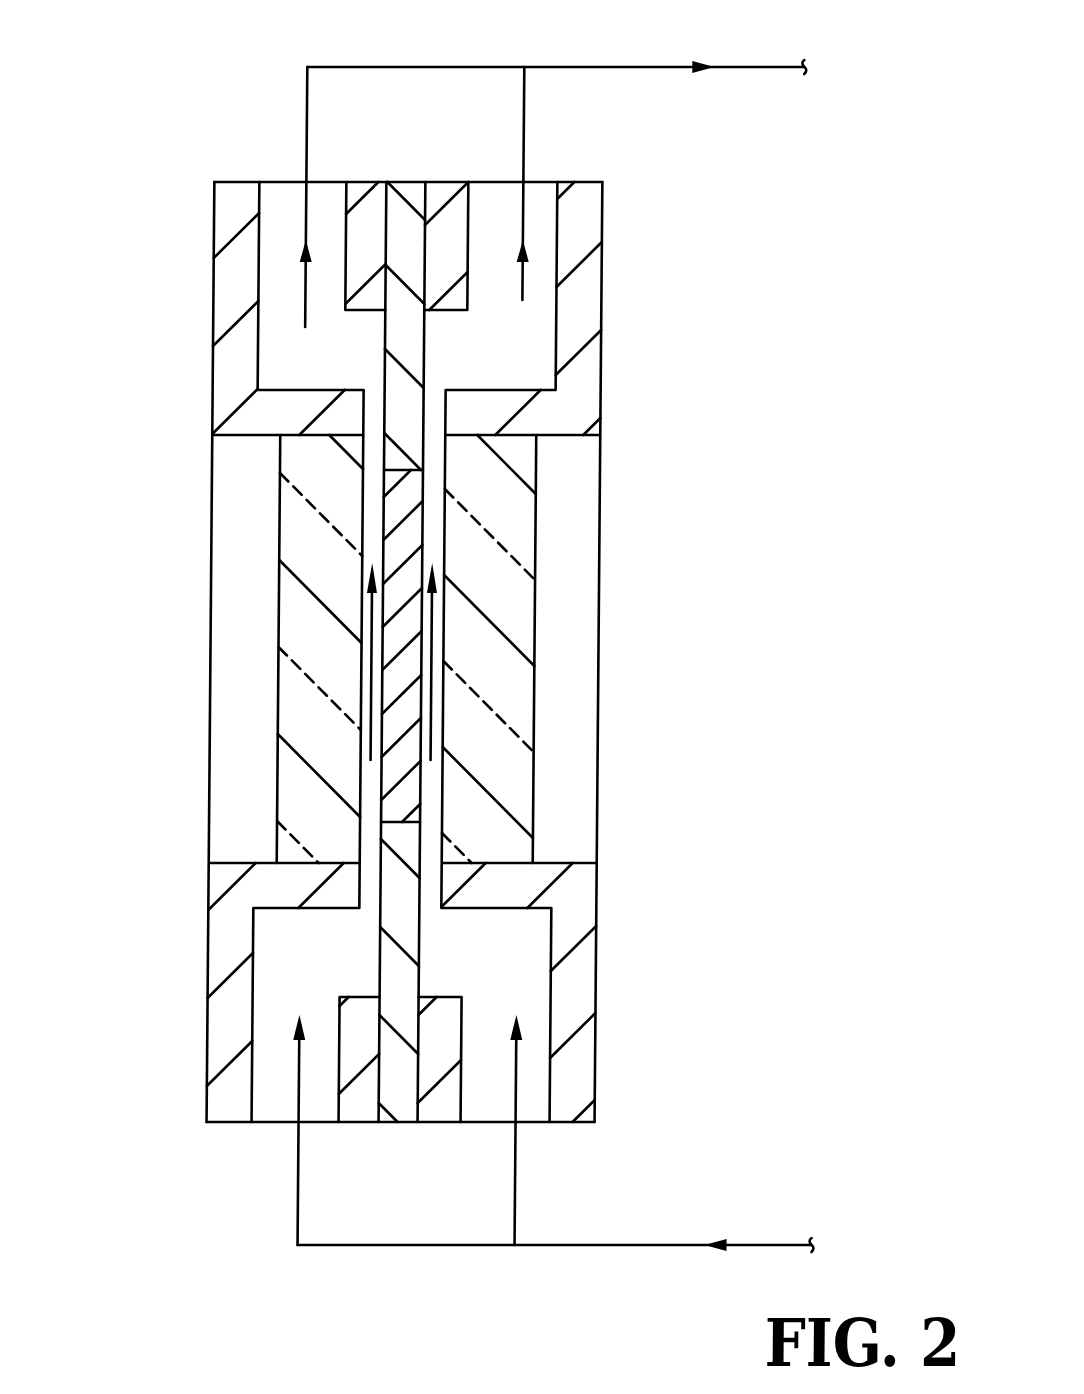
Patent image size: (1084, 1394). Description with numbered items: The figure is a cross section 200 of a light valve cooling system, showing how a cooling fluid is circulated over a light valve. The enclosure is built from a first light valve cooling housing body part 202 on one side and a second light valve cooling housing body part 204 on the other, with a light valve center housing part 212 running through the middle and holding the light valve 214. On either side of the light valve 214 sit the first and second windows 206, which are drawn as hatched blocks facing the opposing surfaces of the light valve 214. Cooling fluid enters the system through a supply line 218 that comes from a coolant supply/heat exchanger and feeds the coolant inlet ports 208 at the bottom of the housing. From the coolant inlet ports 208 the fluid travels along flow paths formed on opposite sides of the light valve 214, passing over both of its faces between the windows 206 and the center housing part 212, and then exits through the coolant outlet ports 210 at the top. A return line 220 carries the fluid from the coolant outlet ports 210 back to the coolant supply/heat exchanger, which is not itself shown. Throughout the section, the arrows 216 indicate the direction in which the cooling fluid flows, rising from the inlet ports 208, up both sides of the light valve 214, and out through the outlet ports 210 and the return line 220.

The cross section 200 is at (139, 59).
The first light valve cooling housing body part 202 is at (211, 307).
The second light valve cooling housing body part 204 is at (603, 368).
The first and second windows 206 is at (282, 548).
The coolant inlet ports 208 is at (285, 1098).
The coolant outlet ports 210 is at (287, 197).
The light valve center housing part 212 is at (408, 184).
The light valve 214 is at (397, 503).
The arrows 216 is at (377, 670).
The supply line 218 is at (639, 1247).
The return line 220 is at (738, 65).